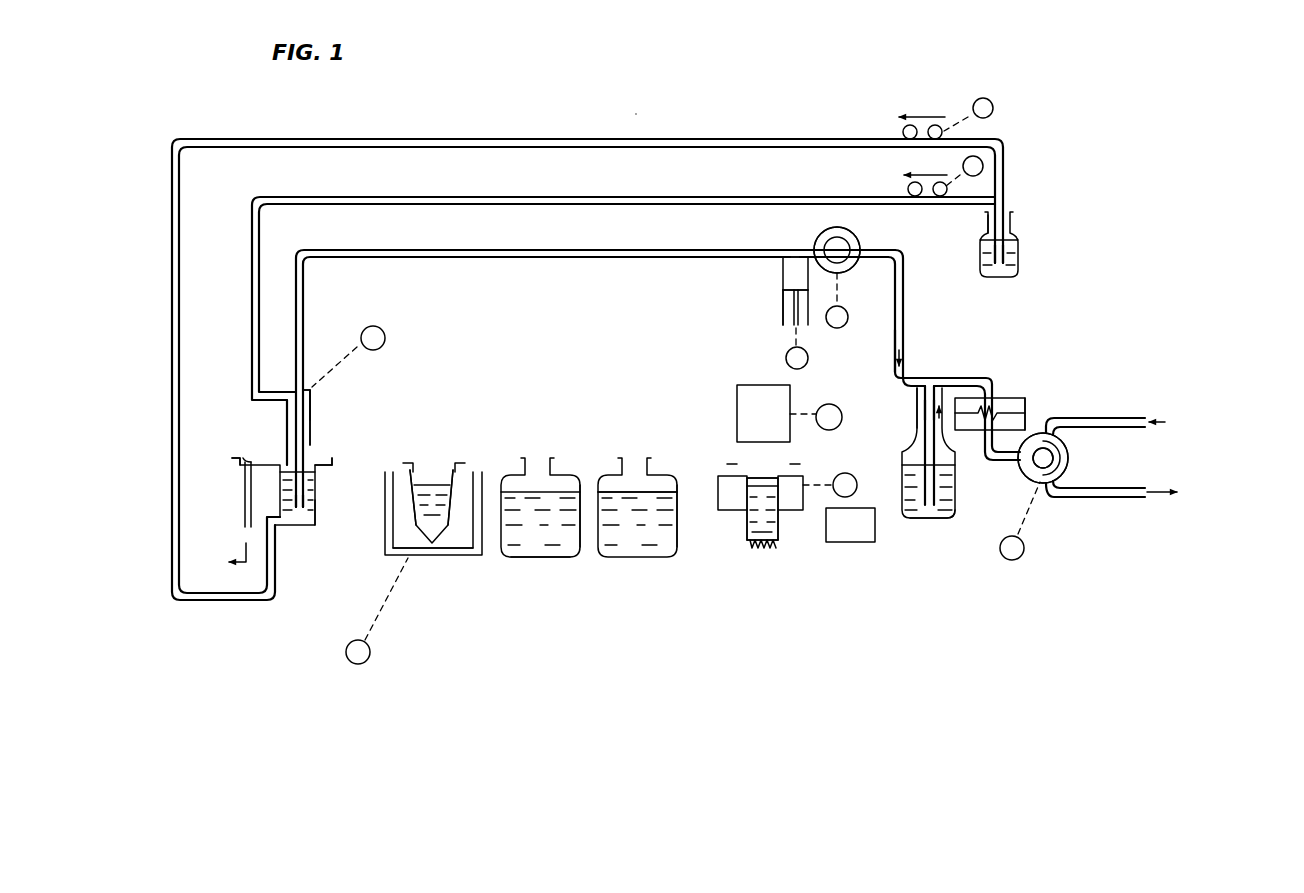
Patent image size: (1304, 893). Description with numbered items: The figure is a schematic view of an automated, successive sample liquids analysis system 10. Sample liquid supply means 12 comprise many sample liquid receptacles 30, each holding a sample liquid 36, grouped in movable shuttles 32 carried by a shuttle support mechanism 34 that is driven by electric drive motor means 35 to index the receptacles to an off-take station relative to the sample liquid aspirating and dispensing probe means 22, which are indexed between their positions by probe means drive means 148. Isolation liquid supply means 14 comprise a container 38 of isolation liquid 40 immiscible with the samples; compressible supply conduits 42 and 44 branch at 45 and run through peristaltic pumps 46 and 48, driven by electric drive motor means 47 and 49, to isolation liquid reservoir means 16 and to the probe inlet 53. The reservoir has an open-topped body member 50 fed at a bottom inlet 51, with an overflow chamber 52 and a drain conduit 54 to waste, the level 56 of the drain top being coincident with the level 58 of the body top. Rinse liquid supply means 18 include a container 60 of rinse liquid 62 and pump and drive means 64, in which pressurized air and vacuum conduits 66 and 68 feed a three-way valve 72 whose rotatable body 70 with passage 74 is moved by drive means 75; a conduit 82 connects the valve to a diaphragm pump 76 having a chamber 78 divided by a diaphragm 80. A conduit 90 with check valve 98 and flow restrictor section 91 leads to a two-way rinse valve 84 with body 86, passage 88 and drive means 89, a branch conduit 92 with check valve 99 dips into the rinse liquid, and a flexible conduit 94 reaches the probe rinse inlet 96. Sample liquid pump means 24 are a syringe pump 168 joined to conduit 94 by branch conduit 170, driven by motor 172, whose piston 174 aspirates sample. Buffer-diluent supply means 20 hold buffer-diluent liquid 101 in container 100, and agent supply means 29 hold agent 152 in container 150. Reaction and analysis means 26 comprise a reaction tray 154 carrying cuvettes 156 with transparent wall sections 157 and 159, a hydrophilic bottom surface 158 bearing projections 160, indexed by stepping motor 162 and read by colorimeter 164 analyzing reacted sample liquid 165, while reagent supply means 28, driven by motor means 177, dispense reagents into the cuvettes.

The sample liquids analysis system 10 is at (637, 114).
The sample liquid supply means 12 is at (419, 584).
The isolation liquid supply means 14 is at (1033, 222).
The isolation liquid reservoir means 16 is at (323, 533).
The rinse liquid supply means 18 is at (891, 417).
The buffer-diluent liquid supply means 20 is at (559, 574).
The sample liquid aspirating and dispensing probe means 22 is at (325, 429).
The sample liquid pump means 24 is at (772, 329).
The sample liquid reaction and analysis means 26 is at (837, 567).
The reagent and/or substrate liquid supply and dispensing means 28 is at (734, 410).
The agent supply means 29 is at (644, 574).
The sample liquid receptacle 30 is at (417, 508).
The shuttle 32 is at (462, 542).
The shuttle support mechanism 34 is at (447, 558).
The electric drive motor means 35 is at (370, 652).
The sample liquid 36 is at (455, 492).
The isolation liquid container 38 is at (1018, 250).
The isolation liquid 40 is at (985, 267).
The isolation liquid supply conduit 42 is at (1005, 163).
The isolation liquid supply conduit 44 is at (252, 395).
The branch 45 is at (1001, 187).
The peristaltic pump 46 is at (939, 101).
The electric drive motor means 47 is at (995, 108).
The peristaltic pump 48 is at (921, 163).
The electric drive motor means 49 is at (960, 168).
The reservoir body member 50 is at (318, 513).
The isolation liquid inlet 51 is at (312, 517).
The liquid overflow chamber 52 is at (232, 457).
The isolation liquid inlet 53 is at (287, 388).
The drain conduit 54 is at (243, 510).
The level of upper end of drain conduit 56 is at (248, 462).
The level of top of reservoir body member 58 is at (313, 460).
The rinse liquid container 60 is at (957, 500).
The rinse liquid 62 is at (947, 510).
The rinse liquid supply pump and pump drive means 64 is at (1034, 421).
The pressurized air supply conduit 66 is at (1117, 414).
The vacuum supply conduit 68 is at (1099, 500).
The rotatable valve body member 70 is at (1072, 478).
The three-way valve 72 is at (1066, 465).
The valve passage 74 is at (1060, 447).
The electric drive motor means 75 is at (1019, 558).
The diaphragm pump 76 is at (968, 432).
The pumping chamber 78 is at (998, 406).
The diaphragm 80 is at (998, 398).
The conduit 82 is at (1005, 462).
The two-way rinse liquid supply valve 84 is at (817, 233).
The rotatable valve body member 86 is at (835, 232).
The valve passage 88 is at (845, 246).
The electric drive motor means 89 is at (854, 310).
The conduit 90 is at (905, 290).
The flow restrictor tube section 91 is at (905, 323).
The conduit 92 is at (913, 420).
The flexible conduit 94 is at (307, 300).
The rinse liquid inlet 96 is at (330, 391).
The check valve 98 is at (924, 400).
The check valve 99 is at (909, 383).
The buffer-diluent liquid container 100 is at (580, 553).
The buffer-diluent liquid 101 is at (527, 546).
The probe means drive means 148 is at (385, 345).
The agent container 150 is at (675, 553).
The agent 152 is at (615, 492).
The reaction tray 154 is at (722, 478).
The reaction cuvette 156 is at (782, 477).
The transparent cuvette wall section 157 is at (745, 518).
The bottom surface 158 is at (765, 544).
The transparent cuvette wall section 159 is at (790, 528).
The ridges or projections 160 is at (778, 538).
The electrical stepping motor 162 is at (852, 486).
The colorimeter 164 is at (857, 542).
The reacted sample liquid 165 is at (760, 478).
The syringe pump 168 is at (785, 286).
The branch conduit 170 is at (785, 268).
The electric drive motor 172 is at (824, 350).
The syringe pump piston 174 is at (781, 312).
The electric drive motor means 177 is at (838, 428).